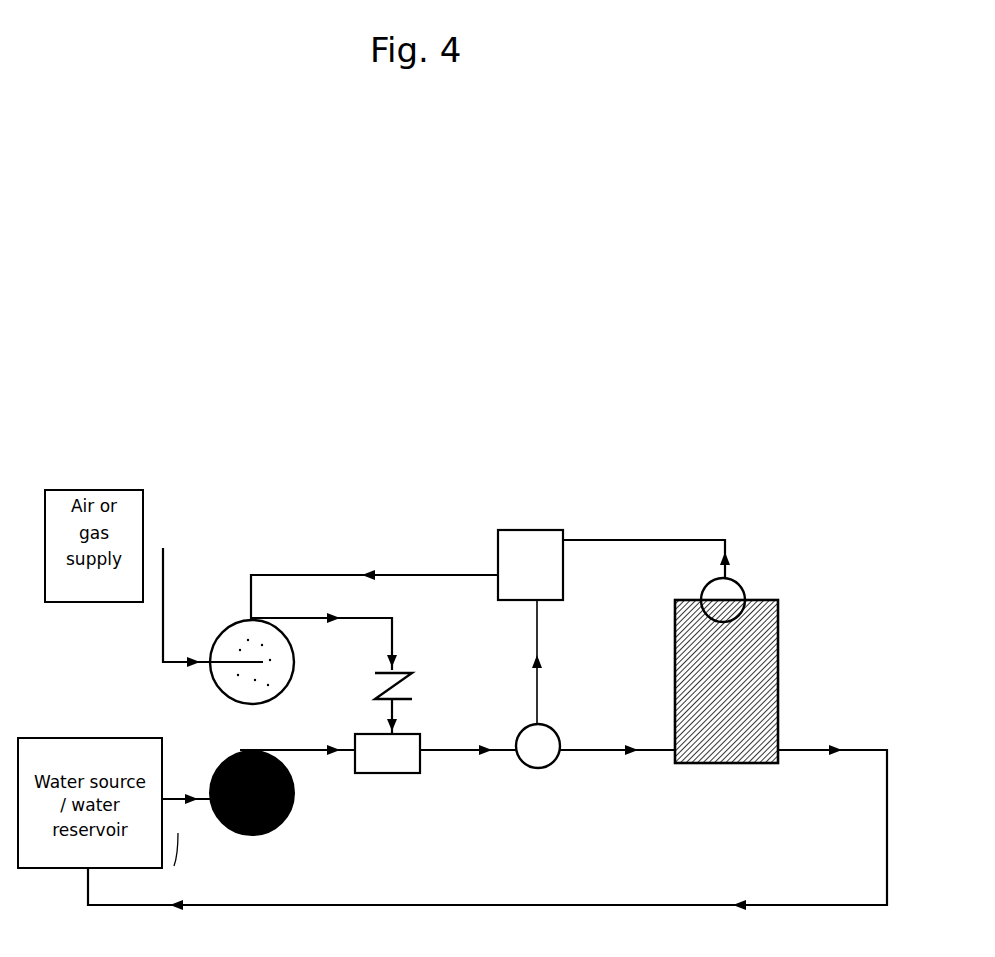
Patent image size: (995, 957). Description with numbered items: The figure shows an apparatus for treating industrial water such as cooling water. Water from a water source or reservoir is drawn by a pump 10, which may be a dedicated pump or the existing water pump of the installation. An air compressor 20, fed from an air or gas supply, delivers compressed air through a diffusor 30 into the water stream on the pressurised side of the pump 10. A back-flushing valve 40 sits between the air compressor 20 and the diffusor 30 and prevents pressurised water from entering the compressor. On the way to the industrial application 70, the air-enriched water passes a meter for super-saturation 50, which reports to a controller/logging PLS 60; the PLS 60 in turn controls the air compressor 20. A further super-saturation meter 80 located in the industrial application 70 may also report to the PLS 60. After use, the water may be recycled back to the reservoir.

The pump 10 is at (280, 832).
The air compressor 20 is at (273, 700).
The diffusor 30 is at (408, 812).
The back-flushing valve 40 is at (415, 683).
The meter for super-saturation 50 is at (558, 764).
The controller/logging PLS 60 is at (551, 602).
The industrial application 70 is at (757, 767).
The super-saturation meter 80 is at (745, 592).